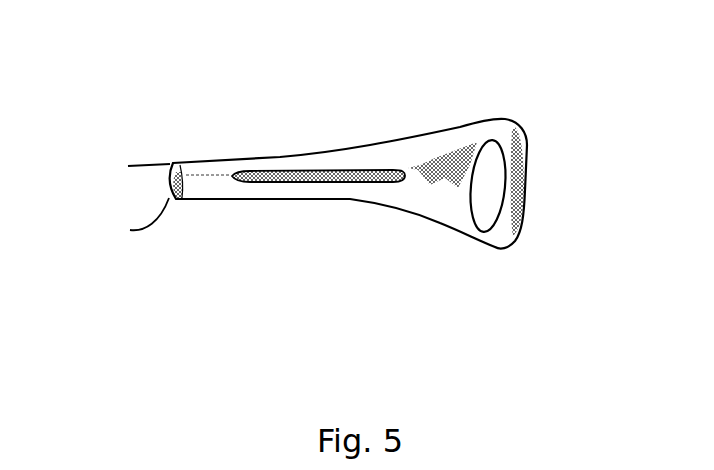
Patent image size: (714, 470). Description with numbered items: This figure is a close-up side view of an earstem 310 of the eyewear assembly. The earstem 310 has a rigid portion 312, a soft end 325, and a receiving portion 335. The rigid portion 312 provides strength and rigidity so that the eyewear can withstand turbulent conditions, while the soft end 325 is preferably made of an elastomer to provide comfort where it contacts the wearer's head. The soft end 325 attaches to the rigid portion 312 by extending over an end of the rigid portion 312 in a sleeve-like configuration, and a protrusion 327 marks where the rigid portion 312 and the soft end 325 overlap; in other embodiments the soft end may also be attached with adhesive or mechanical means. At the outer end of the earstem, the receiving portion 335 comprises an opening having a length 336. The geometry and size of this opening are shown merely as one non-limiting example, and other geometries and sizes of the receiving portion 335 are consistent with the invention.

The earstem 310 is at (199, 113).
The rigid portion 312 is at (138, 190).
The soft end 325 is at (308, 155).
The protrusion 327 is at (383, 172).
The receiving portion 335 is at (483, 208).
The length 336 is at (533, 137).